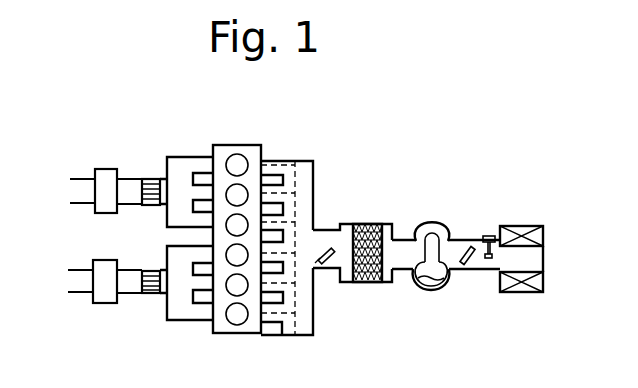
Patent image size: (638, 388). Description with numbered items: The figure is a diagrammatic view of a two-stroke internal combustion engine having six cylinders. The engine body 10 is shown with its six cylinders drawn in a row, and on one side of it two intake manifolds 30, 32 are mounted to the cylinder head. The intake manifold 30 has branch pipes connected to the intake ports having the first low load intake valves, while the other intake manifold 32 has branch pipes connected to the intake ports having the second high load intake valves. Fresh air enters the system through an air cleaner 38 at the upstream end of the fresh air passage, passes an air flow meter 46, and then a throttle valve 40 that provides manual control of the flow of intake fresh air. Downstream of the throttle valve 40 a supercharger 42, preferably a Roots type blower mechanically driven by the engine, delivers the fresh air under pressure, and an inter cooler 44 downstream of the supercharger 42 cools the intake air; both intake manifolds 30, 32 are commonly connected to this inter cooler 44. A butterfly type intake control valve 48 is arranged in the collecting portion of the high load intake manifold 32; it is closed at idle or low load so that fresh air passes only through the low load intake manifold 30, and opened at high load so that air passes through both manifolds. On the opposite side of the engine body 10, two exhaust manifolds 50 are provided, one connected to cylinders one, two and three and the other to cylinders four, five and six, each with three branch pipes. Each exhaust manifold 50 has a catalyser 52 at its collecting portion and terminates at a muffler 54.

The engine body 10 is at (238, 144).
The intake manifold 30 is at (322, 230).
The intake manifold 32 is at (315, 263).
The air cleaner 38 is at (518, 225).
The throttle valve 40 is at (468, 265).
The supercharger 42 is at (428, 290).
The inter cooler 44 is at (372, 222).
The air flow meter 46 is at (485, 237).
The intake control valve 48 is at (332, 280).
The exhaust manifold 50 is at (173, 156).
The catalyser 52 is at (145, 179).
The muffler 54 is at (100, 169).